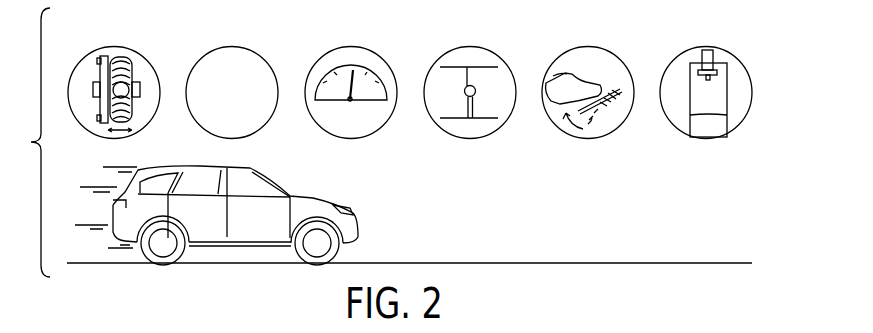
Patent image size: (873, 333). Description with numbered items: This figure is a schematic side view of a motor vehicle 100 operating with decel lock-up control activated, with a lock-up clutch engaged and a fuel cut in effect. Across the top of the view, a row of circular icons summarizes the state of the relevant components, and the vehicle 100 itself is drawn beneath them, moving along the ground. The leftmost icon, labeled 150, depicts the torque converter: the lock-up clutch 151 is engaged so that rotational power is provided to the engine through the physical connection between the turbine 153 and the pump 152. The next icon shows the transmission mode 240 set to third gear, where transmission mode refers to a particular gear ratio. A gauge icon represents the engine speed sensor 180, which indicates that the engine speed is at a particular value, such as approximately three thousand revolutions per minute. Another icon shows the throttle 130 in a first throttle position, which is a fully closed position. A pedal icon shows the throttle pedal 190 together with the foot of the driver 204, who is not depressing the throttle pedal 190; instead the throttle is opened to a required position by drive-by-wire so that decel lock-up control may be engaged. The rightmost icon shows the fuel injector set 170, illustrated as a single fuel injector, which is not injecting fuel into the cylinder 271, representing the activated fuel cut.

The motor vehicle 100 is at (373, 222).
The throttle 130 is at (445, 52).
The tire 150 is at (140, 55).
The lock-up clutch 151 is at (121, 58).
The pump 152 is at (131, 116).
The turbine 153 is at (105, 125).
The fuel injector set 170 is at (732, 128).
The engine speed sensor 180 is at (377, 123).
The throttle pedal 190 is at (590, 137).
The driver 204 is at (580, 80).
The transmission mode 240 is at (258, 53).
The cylinder 271 is at (727, 95).